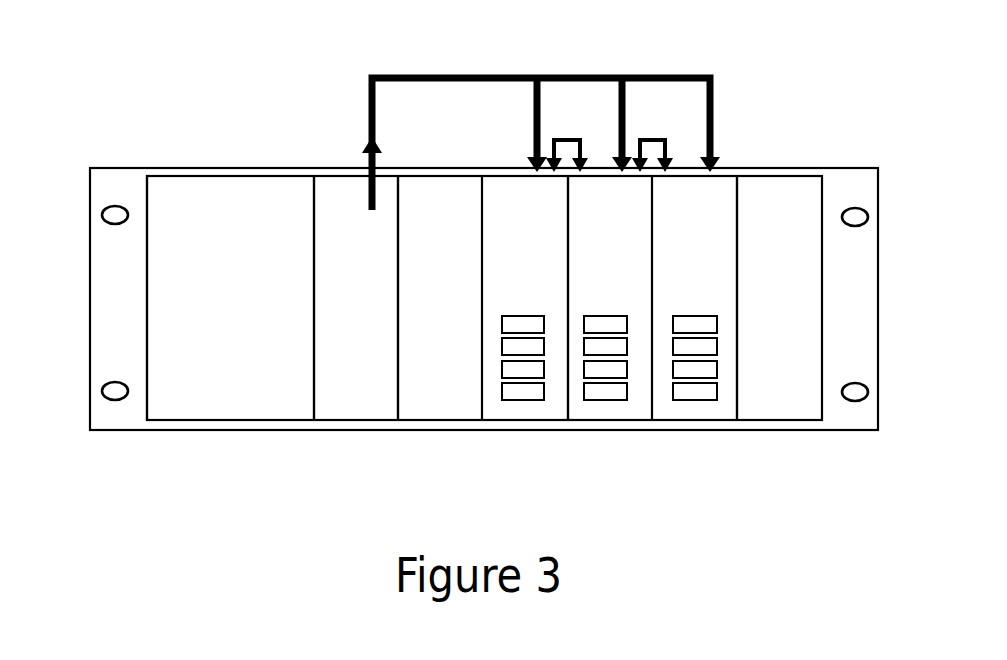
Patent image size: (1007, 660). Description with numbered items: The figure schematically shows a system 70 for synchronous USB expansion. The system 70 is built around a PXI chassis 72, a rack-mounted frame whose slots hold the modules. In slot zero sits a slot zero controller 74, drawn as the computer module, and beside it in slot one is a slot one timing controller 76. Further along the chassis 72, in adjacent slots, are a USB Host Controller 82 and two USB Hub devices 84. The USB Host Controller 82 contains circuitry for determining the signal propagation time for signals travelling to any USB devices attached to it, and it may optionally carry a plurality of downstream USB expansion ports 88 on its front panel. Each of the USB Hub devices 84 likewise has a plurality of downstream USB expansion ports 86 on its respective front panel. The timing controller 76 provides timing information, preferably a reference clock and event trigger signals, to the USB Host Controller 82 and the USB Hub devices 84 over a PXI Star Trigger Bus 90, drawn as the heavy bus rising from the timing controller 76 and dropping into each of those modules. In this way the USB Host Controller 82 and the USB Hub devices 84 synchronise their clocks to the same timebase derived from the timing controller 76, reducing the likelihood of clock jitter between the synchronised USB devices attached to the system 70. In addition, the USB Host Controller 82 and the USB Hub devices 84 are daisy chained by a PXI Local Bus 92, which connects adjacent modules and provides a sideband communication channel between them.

The system 70 is at (98, 57).
The PXI chassis 72 is at (113, 431).
The slot 0 controller 74 is at (232, 421).
The slot 1 timing controller 76 is at (353, 421).
The USB Host Controller 82 is at (482, 390).
The USB Hub devices 84 is at (625, 227).
The downstream USB expansion ports 86 is at (677, 414).
The downstream USB expansion ports 88 is at (528, 412).
The PXI Star Trigger Bus 90 is at (367, 117).
The PXI Local Bus 92 is at (652, 138).